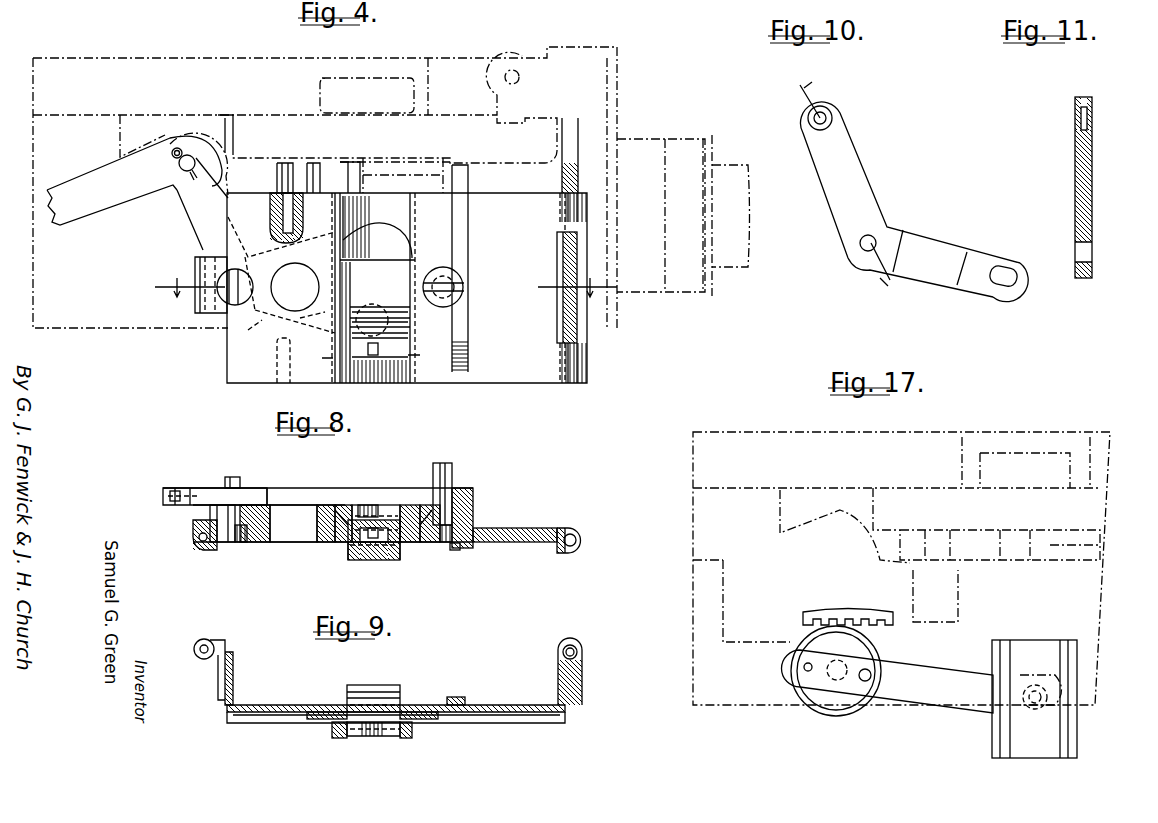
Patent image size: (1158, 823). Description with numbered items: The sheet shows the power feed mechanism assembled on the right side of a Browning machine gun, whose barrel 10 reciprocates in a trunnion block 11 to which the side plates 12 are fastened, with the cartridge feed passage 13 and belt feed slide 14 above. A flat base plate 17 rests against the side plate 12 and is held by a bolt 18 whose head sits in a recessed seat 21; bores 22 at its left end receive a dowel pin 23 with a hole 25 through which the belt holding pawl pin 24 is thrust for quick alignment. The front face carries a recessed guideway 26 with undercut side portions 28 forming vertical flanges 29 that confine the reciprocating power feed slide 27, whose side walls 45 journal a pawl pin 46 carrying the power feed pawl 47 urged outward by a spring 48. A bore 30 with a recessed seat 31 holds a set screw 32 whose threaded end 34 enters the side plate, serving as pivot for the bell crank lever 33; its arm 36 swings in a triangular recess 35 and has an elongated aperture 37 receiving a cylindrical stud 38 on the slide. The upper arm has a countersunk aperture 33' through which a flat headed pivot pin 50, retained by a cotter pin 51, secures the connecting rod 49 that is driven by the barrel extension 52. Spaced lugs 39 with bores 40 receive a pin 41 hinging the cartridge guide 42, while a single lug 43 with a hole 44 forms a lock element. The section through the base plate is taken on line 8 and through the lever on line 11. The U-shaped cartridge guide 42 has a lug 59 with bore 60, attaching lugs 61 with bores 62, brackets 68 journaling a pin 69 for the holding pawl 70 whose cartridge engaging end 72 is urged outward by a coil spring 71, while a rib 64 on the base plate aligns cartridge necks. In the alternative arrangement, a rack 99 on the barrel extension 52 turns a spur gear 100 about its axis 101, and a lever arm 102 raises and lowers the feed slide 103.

In FIG. 4, the section line 8 is at (385, 287).
In FIG. 4, the barrel 10 is at (725, 175).
In FIG. 10, the trunnion block 11 is at (847, 185).
In FIG. 4, the side plate 12 is at (95, 328).
In FIG. 4, the cartridge feed passage 13 is at (395, 146).
In FIG. 4, the belt feed slide 14 is at (318, 90).
In FIG. 4, the base plate 17 is at (535, 288).
In FIG. 8, the base plate 17 is at (472, 482).
In FIG. 4, the bolt 18 is at (462, 280).
In FIG. 8, the bolt 18 is at (452, 475).
In FIG. 4, the recessed seat 21 is at (460, 296).
In FIG. 8, the recessed seat 21 is at (470, 522).
In FIG. 4, the bore 22 is at (276, 353).
In FIG. 4, the dowel pin 23 is at (300, 218).
In FIG. 4, the belt holding pawl pin 24 is at (314, 163).
In FIG. 4, the hole 25 is at (284, 163).
In FIG. 4, the recessed guideway 26 is at (408, 204).
In FIG. 8, the recessed guideway 26 is at (340, 505).
In FIG. 4, the power feed slide 27 is at (380, 272).
In FIG. 8, the power feed slide 27 is at (412, 500).
In FIG. 4, the undercut side portion 28 is at (328, 241).
In FIG. 8, the undercut side portion 28 is at (447, 555).
In FIG. 4, the vertical flange 29 is at (424, 238).
In FIG. 8, the vertical flange 29 is at (432, 550).
In FIG. 8, the bore 30 is at (215, 513).
In FIG. 8, the recessed seat 31 is at (262, 543).
In FIG. 4, the set screw 32 is at (240, 272).
In FIG. 8, the set screw 32 is at (240, 543).
In FIG. 4, the bell crank lever 33 is at (196, 182).
In FIG. 8, the bell crank lever 33 is at (215, 484).
In FIG. 10, the bell crank lever 33 is at (910, 199).
In FIG. 11, the bell crank lever 33 is at (1100, 187).
In FIG. 8, the countersunk aperture 33' is at (177, 482).
In FIG. 10, the countersunk aperture 33' is at (841, 116).
In FIG. 11, the countersunk aperture 33' is at (1066, 118).
In FIG. 8, the threaded end 34 is at (238, 472).
In FIG. 4, the recess 35 is at (308, 285).
In FIG. 8, the recess 35 is at (402, 488).
In FIG. 4, the arm 36 is at (295, 287).
In FIG. 8, the arm 36 is at (345, 505).
In FIG. 10, the arm 36 is at (975, 270).
In FIG. 4, the elongated aperture 37 is at (370, 305).
In FIG. 8, the elongated aperture 37 is at (365, 490).
In FIG. 10, the elongated aperture 37 is at (1005, 275).
In FIG. 4, the cylindrical stud 38 is at (400, 335).
In FIG. 8, the cylindrical stud 38 is at (372, 500).
In FIG. 4, the lug 39 is at (600, 362).
In FIG. 8, the lug 39 is at (572, 530).
In FIG. 4, the bore 40 is at (562, 361).
In FIG. 8, the bore 40 is at (578, 541).
In FIG. 4, the pin 41 is at (578, 252).
In FIG. 9, the cartridge guide 42 is at (492, 703).
In FIG. 4, the lug 43 is at (195, 260).
In FIG. 8, the lug 43 is at (193, 537).
In FIG. 4, the hole 44 is at (212, 272).
In FIG. 8, the hole 44 is at (200, 541).
In FIG. 4, the side wall 45 is at (370, 358).
In FIG. 8, the side wall 45 is at (415, 568).
In FIG. 4, the pawl pin 46 is at (380, 362).
In FIG. 8, the pawl pin 46 is at (382, 545).
In FIG. 4, the power feed pawl 47 is at (395, 315).
In FIG. 8, the power feed pawl 47 is at (360, 558).
In FIG. 4, the spring 48 is at (368, 362).
In FIG. 8, the spring 48 is at (372, 560).
In FIG. 4, the connecting rod 49 is at (110, 200).
In FIG. 4, the pivot pin 50 is at (190, 156).
In FIG. 4, the cotter pin 51 is at (173, 149).
In FIG. 17, the barrel extension 52 is at (745, 570).
In FIG. 9, the lug 59 is at (580, 660).
In FIG. 9, the bore 60 is at (582, 650).
In FIG. 9, the attaching lug 61 is at (205, 658).
In FIG. 9, the pin receiving bore 62 is at (196, 646).
In FIG. 4, the rib 64 is at (466, 238).
In FIG. 8, the rib 64 is at (460, 550).
In FIG. 9, the rib 64 is at (442, 690).
In FIG. 9, the bracket 68 is at (406, 738).
In FIG. 9, the pin 69 is at (412, 726).
In FIG. 9, the holding pawl 70 is at (360, 706).
In FIG. 9, the coil spring 71 is at (372, 738).
In FIG. 9, the cartridge engaging end 72 is at (345, 685).
In FIG. 17, the rack 99 is at (858, 620).
In FIG. 17, the spur gear 100 is at (878, 640).
In FIG. 17, the axis 101 is at (833, 661).
In FIG. 17, the lever arm 102 is at (940, 675).
In FIG. 17, the feed slide 103 is at (1034, 690).